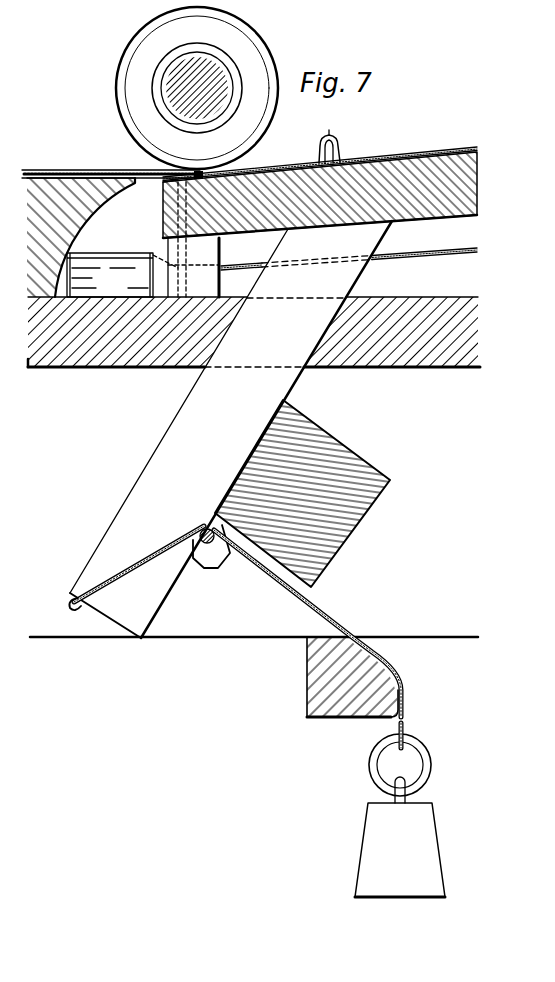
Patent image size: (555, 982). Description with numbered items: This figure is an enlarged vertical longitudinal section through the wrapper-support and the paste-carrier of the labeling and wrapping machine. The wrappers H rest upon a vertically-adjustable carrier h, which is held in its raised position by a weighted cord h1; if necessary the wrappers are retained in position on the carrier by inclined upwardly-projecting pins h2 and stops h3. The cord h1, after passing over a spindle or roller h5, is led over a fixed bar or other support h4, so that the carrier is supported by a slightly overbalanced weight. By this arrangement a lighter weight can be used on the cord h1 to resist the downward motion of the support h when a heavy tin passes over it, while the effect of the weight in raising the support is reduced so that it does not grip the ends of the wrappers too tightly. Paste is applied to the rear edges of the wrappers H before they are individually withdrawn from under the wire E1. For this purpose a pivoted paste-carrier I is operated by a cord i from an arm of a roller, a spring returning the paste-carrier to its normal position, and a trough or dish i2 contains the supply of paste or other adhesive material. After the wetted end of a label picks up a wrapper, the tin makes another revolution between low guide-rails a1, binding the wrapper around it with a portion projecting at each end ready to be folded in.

The wrapper H is at (120, 111).
The low guide-rails a1 is at (72, 168).
The wire E1 is at (199, 177).
The pivoted paste-carrier I is at (185, 182).
The vertically-adjustable carrier h is at (320, 192).
The inclined upwardly-projecting pins h2 is at (336, 139).
The stops h3 is at (343, 151).
The cord i is at (423, 256).
The trough or dish i2 is at (150, 262).
The spindle or roller h5 is at (200, 527).
The weighted cord h1 is at (325, 612).
The fixed bar or other support h4 is at (307, 678).